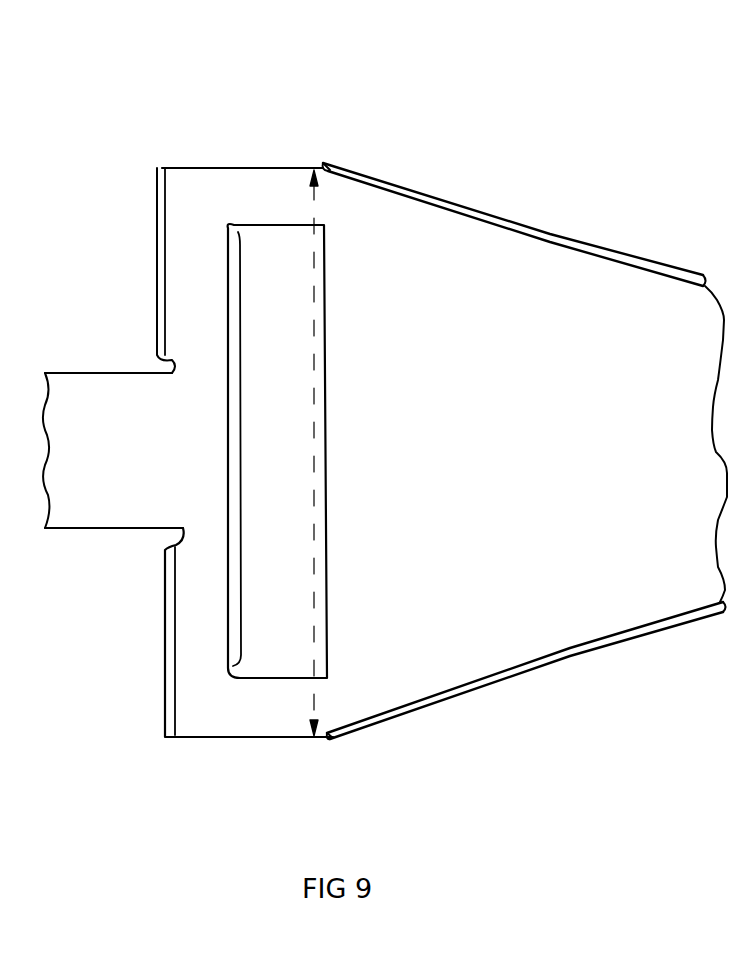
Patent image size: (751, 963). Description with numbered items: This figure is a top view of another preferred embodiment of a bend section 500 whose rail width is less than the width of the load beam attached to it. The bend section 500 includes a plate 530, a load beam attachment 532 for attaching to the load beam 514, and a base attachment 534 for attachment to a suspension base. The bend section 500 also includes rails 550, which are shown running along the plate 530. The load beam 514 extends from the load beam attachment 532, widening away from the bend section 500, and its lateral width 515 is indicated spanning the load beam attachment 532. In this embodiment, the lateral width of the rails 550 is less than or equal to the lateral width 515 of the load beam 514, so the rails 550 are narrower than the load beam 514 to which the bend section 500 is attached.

The bend section 500 is at (560, 62).
The load beam 514 is at (588, 275).
The lateral width of load beam 515 is at (317, 432).
The plate 530 is at (189, 234).
The load beam attachment 532 is at (290, 175).
The base attachment 534 is at (111, 503).
The rails 550 is at (155, 226).